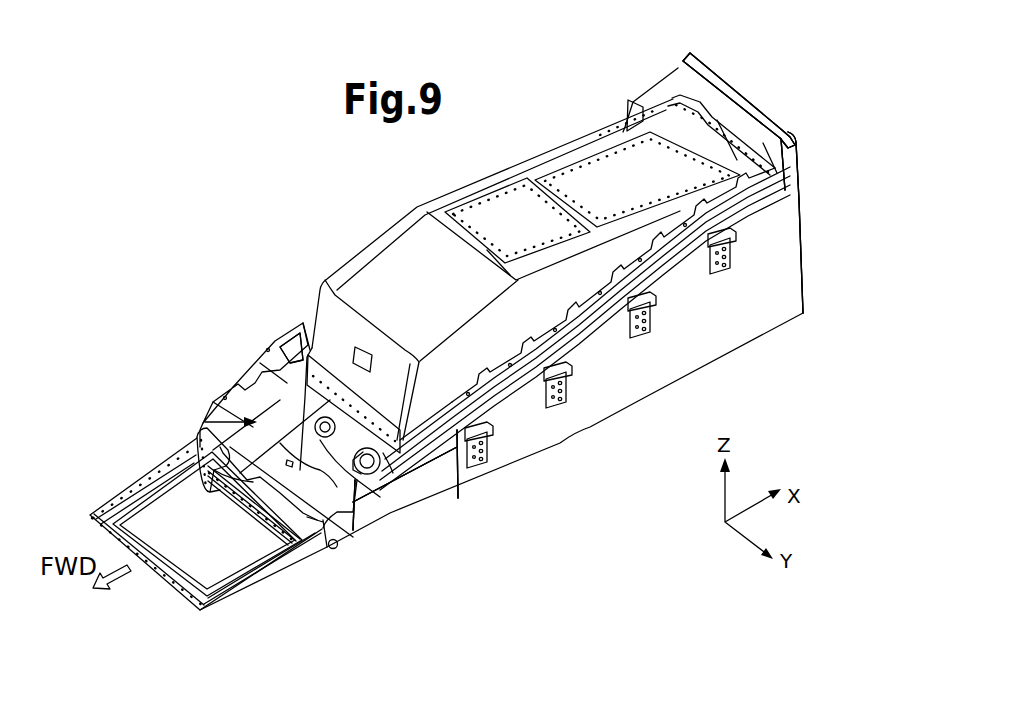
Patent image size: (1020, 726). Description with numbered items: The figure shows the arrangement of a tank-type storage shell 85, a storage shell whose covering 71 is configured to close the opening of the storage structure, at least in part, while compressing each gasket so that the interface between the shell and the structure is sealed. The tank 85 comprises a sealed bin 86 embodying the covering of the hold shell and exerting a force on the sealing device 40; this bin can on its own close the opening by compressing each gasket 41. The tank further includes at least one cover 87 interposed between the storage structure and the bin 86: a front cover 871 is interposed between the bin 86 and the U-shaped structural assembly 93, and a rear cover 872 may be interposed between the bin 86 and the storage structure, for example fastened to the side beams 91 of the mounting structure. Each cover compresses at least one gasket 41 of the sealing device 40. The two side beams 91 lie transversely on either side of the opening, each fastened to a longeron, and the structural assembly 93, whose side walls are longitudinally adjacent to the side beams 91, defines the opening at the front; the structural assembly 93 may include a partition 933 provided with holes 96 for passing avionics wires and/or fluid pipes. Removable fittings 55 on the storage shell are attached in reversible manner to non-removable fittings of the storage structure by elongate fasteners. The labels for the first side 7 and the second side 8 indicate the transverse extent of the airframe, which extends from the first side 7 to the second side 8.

The second side 8 is at (339, 227).
The first side 7 is at (603, 503).
The sealed bin 86 is at (787, 243).
The covering 71 is at (437, 548).
The tank 85 is at (824, 262).
The cover 87 is at (735, 92).
The front cover 871 is at (428, 511).
The rear cover 872 is at (762, 87).
The side beam 91 is at (670, 242).
The U-shaped structural assembly 93 is at (202, 423).
The holes 96 is at (180, 494).
The partition 933 is at (267, 500).
The removable fitting 55 is at (503, 430).
The sealing device 40 is at (255, 378).
The gasket 41 is at (246, 340).